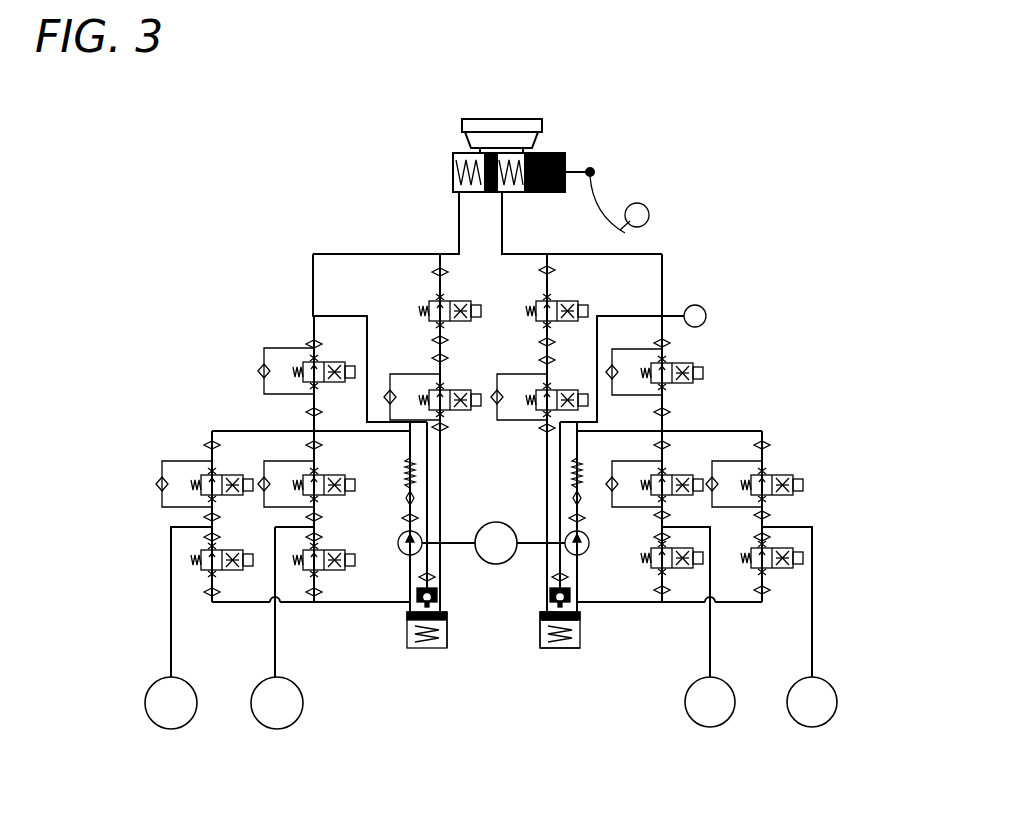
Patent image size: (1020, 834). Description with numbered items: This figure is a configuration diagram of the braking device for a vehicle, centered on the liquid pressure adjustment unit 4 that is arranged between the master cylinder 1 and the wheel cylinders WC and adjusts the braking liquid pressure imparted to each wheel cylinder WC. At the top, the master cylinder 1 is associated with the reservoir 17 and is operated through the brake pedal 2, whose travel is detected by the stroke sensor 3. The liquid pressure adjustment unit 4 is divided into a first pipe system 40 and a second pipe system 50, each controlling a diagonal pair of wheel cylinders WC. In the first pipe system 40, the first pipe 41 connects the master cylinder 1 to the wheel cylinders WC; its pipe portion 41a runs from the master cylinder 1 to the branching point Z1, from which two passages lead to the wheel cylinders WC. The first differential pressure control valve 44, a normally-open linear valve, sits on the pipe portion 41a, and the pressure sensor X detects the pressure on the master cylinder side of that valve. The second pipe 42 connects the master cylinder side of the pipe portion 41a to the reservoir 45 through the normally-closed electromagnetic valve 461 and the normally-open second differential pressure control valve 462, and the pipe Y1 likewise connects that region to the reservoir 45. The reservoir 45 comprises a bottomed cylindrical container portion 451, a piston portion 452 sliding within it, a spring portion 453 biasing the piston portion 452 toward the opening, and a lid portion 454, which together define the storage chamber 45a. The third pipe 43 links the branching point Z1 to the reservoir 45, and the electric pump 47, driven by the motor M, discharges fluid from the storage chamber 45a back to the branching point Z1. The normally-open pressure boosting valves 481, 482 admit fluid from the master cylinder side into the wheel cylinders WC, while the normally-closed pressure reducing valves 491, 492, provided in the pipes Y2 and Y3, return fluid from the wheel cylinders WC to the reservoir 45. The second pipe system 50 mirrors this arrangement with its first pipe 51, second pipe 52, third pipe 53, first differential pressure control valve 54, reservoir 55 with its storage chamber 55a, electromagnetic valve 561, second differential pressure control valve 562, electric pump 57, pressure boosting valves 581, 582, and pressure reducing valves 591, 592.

The master cylinder 1 is at (549, 156).
The brake pedal 2 is at (605, 198).
The stroke sensor 3 is at (650, 205).
The liquid pressure adjustment unit 4 is at (338, 155).
The reservoir 17 is at (512, 130).
The first pipe system 40 is at (764, 245).
The first pipe 41 is at (516, 252).
The pipe portion 41a is at (664, 279).
The second pipe 42 is at (545, 490).
The third pipe 43 is at (571, 574).
The first differential pressure control valve 44 is at (692, 364).
The reservoir 45 is at (560, 650).
The storage chamber 45a is at (541, 620).
The container portion 451 is at (547, 645).
The piston portion 452 is at (548, 630).
The spring portion 453 is at (576, 648).
The lid portion 454 is at (541, 612).
The electromagnetic valve 461 is at (528, 310).
The second differential pressure control valve 462 is at (528, 404).
The electric pump 47 is at (565, 538).
The pressure boosting valve 481 is at (645, 479).
The pressure boosting valve 482 is at (778, 477).
The pressure reducing valve 491 is at (648, 561).
The pressure reducing valve 492 is at (790, 578).
The second pipe system 50 is at (303, 217).
The first pipe 51 is at (394, 252).
The second pipe 52 is at (432, 281).
The third pipe 53 is at (419, 575).
The first differential pressure control valve 54 is at (300, 370).
The reservoir 55 is at (435, 651).
The reservoir port 55a is at (448, 626).
The electromagnetic valve 561 is at (430, 305).
The second differential pressure control valve 562 is at (425, 396).
The electric pump 57 is at (398, 540).
The pressure boosting valve 581 is at (200, 478).
The pressure boosting valve 582 is at (352, 467).
The pressure reducing valve 591 is at (197, 563).
The pressure reducing valve 592 is at (312, 598).
The motor M is at (485, 552).
The pressure sensor X is at (707, 311).
The wheel cylinder WC is at (163, 697).
The pipe Y1 is at (336, 315).
The pipe Y2 is at (375, 604).
The pipe Y3 is at (243, 608).
The branching point Z1 is at (300, 428).